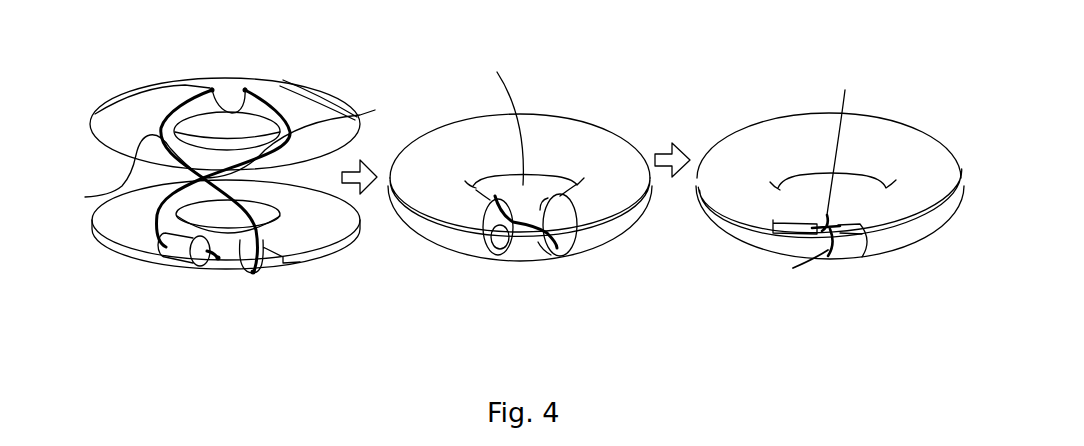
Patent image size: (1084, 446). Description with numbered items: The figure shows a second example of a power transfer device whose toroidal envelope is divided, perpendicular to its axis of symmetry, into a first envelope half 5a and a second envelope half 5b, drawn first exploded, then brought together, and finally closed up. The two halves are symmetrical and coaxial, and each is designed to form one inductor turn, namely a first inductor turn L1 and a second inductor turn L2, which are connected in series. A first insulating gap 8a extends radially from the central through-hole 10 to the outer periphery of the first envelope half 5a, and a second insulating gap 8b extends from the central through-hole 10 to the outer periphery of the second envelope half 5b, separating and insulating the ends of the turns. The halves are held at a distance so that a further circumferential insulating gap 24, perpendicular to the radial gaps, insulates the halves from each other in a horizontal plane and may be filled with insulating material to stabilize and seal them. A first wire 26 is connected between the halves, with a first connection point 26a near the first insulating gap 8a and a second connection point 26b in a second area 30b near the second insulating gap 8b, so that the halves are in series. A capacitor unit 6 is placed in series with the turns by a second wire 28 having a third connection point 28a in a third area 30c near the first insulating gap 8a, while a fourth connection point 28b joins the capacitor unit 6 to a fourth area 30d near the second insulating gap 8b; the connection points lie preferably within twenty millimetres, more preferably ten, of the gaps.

The first envelope half 5a is at (118, 125).
The second envelope half 5b is at (110, 224).
The capacitor unit 6 is at (493, 250).
The first insulating gap 8a is at (835, 158).
The second insulating gap 8b is at (790, 274).
The central through-hole 10 is at (502, 116).
The second insulating gap 24 is at (605, 225).
The first wire 26 is at (208, 160).
The first connection point 26a is at (212, 88).
The second connection point 26b is at (250, 271).
The second wire 28 is at (357, 118).
The third connection point 28a is at (245, 88).
The fourth connection point 28b is at (212, 266).
The second area 30b is at (256, 271).
The third area 30c is at (260, 78).
The fourth area 30d is at (214, 266).
The first inductor turn L1 is at (918, 167).
The second inductor turn L2 is at (897, 228).